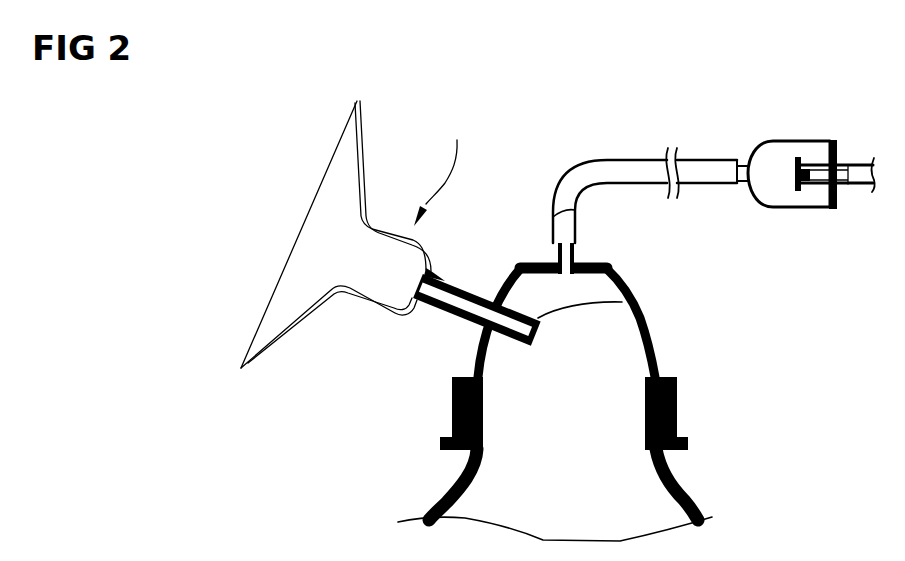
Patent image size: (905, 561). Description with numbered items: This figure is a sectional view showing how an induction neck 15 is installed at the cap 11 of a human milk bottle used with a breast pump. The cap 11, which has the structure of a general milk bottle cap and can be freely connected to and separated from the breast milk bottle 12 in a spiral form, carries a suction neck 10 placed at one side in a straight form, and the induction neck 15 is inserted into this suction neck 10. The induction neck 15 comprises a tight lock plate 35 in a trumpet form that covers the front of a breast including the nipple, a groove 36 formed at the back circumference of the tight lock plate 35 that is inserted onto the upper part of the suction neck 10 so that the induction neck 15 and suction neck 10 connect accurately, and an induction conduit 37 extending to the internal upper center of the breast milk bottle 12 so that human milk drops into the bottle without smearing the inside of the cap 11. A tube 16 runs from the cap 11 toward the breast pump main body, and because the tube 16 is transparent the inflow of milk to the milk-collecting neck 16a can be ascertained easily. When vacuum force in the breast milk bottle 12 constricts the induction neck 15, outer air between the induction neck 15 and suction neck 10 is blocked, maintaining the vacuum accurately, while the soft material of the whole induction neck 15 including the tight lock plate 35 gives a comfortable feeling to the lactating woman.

The suction neck 10 is at (574, 351).
The cap 11 is at (652, 338).
The breast milk bottle 12 is at (683, 488).
The induction neck 15 is at (444, 171).
The tube 16 is at (596, 170).
The milk-collecting neck 16a is at (795, 140).
The tight lock plate 35 is at (362, 133).
The groove 36 is at (458, 320).
The induction conduit 37 is at (611, 302).